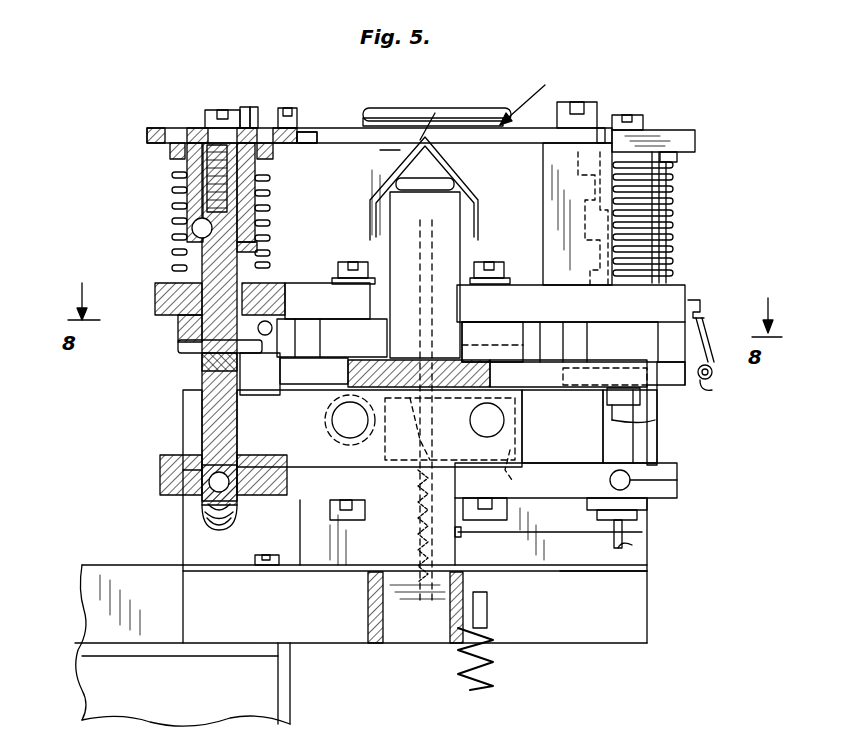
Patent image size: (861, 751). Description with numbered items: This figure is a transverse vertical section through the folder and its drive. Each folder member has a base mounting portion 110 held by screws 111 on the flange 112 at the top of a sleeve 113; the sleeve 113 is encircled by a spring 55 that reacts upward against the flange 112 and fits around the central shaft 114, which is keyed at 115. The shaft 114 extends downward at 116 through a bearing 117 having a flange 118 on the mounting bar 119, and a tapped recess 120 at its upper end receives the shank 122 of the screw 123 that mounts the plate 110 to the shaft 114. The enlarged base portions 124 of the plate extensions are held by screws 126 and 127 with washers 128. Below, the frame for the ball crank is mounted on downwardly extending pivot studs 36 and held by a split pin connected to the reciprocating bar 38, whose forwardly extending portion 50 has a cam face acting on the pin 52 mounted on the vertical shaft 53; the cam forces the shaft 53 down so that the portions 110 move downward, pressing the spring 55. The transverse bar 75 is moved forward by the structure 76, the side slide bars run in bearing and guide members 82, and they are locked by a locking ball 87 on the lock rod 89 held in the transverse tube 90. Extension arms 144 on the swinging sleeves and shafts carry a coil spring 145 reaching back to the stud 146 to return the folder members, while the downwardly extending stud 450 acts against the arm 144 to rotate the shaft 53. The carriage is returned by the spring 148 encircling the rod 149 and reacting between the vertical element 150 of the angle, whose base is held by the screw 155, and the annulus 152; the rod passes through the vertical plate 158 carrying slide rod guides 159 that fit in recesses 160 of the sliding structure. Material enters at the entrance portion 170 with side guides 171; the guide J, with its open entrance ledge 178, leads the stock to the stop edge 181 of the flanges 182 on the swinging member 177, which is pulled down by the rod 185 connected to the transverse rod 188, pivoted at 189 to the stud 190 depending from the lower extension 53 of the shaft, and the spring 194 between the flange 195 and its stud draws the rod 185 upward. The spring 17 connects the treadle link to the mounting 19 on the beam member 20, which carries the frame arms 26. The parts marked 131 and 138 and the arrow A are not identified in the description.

The base mounting portion 110 is at (148, 140).
The screws 111 is at (180, 143).
The flange 112 is at (270, 170).
The sleeve 113 is at (255, 210).
The shaft 114 is at (257, 247).
The key 115 is at (200, 230).
The downward extension of shaft 116 is at (178, 331).
The bearing 117 is at (155, 299).
The flange 118 is at (202, 280).
The mounting bar 119 is at (248, 293).
The tapped recess 120 is at (187, 174).
The shank 122 is at (220, 110).
The screw 123 is at (245, 107).
The enlarged base portions 124 is at (285, 146).
The screw 126 is at (297, 113).
The screw 127 is at (258, 112).
The washers 128 is at (308, 132).
The housing 131 is at (345, 567).
The bearing block 138 is at (185, 462).
The extension arms 144 is at (712, 388).
The coil spring 145 is at (712, 370).
The stud 146 is at (703, 300).
The spring 148 is at (262, 530).
The rod 149 is at (212, 494).
The vertical element 150 is at (640, 530).
The annulus 152 is at (210, 530).
The screw 155 is at (268, 566).
The vertical plate 158 is at (490, 421).
The slide rod guides 159 is at (348, 422).
The recesses 160 is at (527, 472).
The entrance portion 170 is at (452, 108).
The side guides 171 is at (580, 98).
The swinging member 177 is at (460, 211).
The open entrance ledge 178 is at (430, 192).
The stop edge 181 is at (422, 138).
The flanges 182 is at (385, 147).
The rod 185 is at (379, 428).
The transverse rod 188 is at (472, 535).
The pivotal connection 189 is at (622, 552).
The stud 190 is at (590, 569).
The spring 194 is at (418, 521).
The flange 195 is at (418, 410).
The spring 17 is at (488, 606).
The mounting 19 is at (497, 667).
The beam member 20 is at (110, 642).
The frame arms 26 is at (372, 642).
The pivot studs 36 is at (625, 432).
The reciprocating bar 38 is at (628, 342).
The stud 450 is at (568, 375).
The forwardly extending portion 50 is at (185, 348).
The pin 52 is at (250, 388).
The vertical shaft 53 is at (202, 430).
The spring 55 is at (187, 197).
The transverse bar 75 is at (557, 400).
The structure 76 is at (476, 362).
The bearing and guide member 82 is at (660, 384).
The locking ball 87 is at (290, 366).
The lock rod 89 is at (278, 332).
The transverse tube 90 is at (528, 292).
The direction arrow A is at (530, 85).
The guide J is at (455, 185).